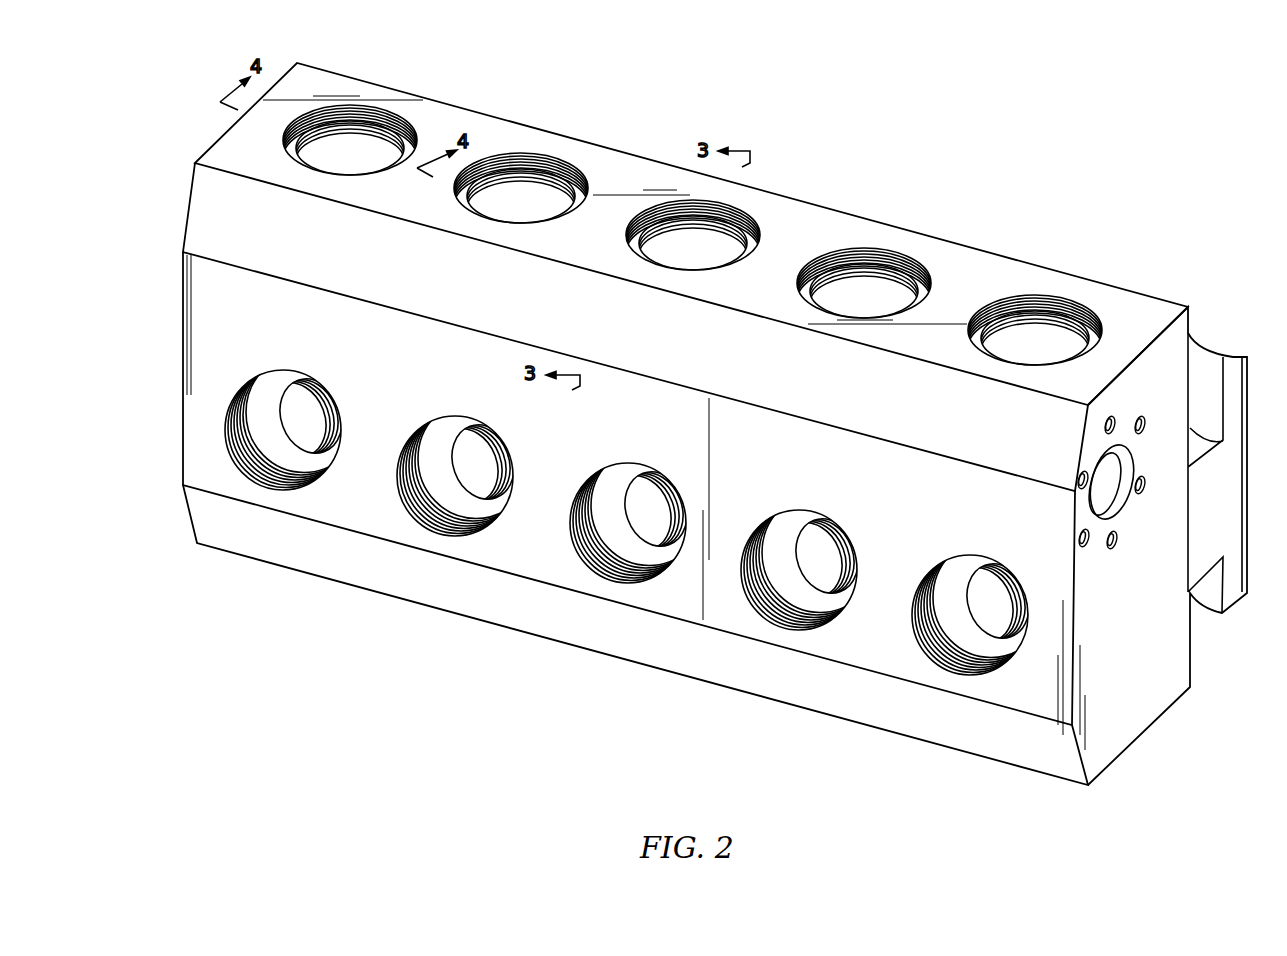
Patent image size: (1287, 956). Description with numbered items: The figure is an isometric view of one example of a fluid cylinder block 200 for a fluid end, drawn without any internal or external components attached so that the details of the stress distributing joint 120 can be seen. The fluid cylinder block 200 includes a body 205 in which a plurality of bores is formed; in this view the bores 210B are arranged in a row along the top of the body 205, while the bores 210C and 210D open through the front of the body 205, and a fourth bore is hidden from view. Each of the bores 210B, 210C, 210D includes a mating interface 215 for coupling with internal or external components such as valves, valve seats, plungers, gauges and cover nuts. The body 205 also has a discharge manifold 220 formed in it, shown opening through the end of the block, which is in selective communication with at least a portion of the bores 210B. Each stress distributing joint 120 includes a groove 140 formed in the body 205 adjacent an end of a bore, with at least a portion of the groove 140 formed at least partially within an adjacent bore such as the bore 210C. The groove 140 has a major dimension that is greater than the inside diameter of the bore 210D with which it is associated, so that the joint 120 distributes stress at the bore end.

The fluid cylinder block 200 is at (1170, 186).
The body 205 is at (1162, 311).
The bore 210B is at (530, 190).
The bore 210C is at (796, 522).
The bore 210D is at (950, 662).
The mating interface 215 is at (733, 217).
The discharge manifold 220 is at (1110, 497).
The stress distributing joint 120 is at (829, 562).
The groove 140 is at (478, 493).